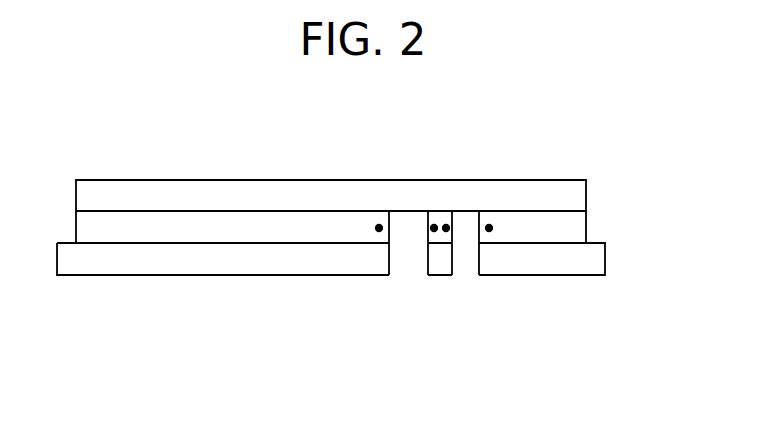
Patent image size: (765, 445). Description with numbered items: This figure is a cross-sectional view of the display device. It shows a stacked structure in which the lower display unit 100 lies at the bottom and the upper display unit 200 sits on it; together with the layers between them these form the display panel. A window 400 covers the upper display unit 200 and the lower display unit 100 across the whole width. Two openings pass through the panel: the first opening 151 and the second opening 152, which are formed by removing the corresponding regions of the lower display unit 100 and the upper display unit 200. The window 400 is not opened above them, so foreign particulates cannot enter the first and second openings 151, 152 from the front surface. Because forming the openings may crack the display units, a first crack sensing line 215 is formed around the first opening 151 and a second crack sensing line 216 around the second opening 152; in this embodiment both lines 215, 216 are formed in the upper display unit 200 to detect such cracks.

The lower display unit 100 is at (595, 257).
The upper display unit 200 is at (577, 228).
The window 400 is at (577, 197).
The first opening 151 is at (408, 270).
The second opening 152 is at (465, 270).
The first crack sensing line 215 is at (379, 228).
The second crack sensing line 216 is at (489, 228).